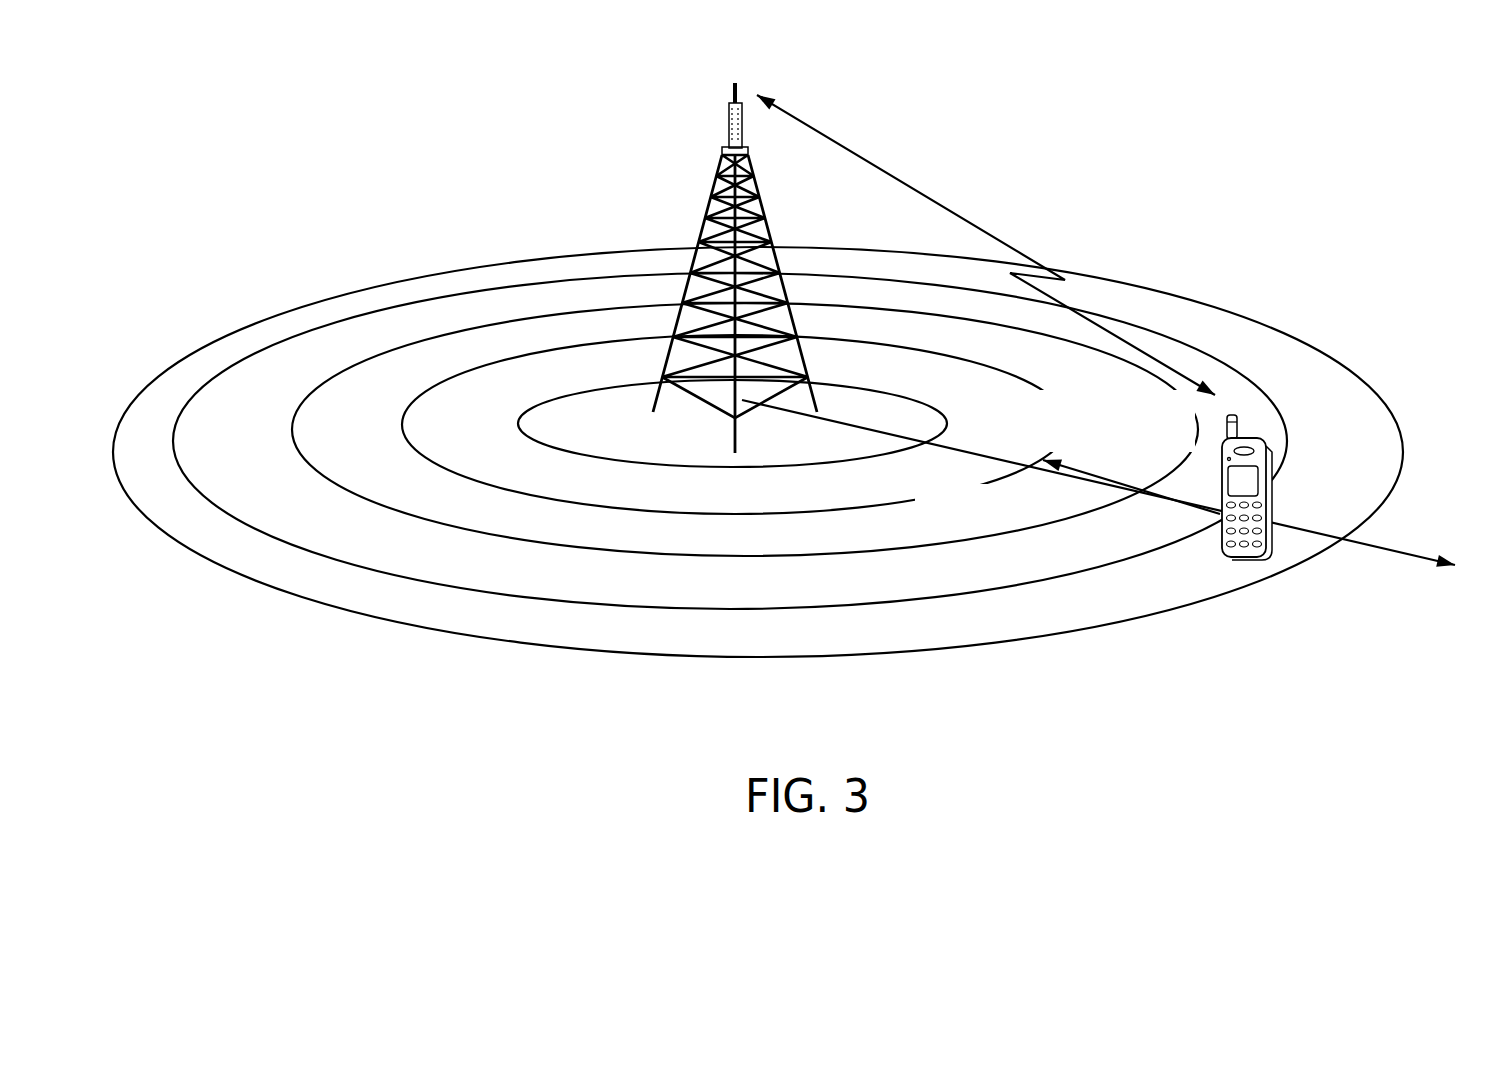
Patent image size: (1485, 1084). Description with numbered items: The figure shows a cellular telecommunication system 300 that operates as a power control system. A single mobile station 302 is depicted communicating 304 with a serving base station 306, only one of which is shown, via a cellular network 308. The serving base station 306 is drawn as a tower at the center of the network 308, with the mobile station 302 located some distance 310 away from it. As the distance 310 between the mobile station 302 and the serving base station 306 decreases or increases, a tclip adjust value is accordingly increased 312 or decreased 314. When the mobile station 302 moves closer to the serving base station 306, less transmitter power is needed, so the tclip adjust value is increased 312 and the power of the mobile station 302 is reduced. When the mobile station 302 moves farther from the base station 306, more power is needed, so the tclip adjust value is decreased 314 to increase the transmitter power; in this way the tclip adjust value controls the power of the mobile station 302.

The cellular telecommunication system 300 is at (483, 160).
The mobile station 302 is at (1273, 507).
The communicating 304 is at (930, 196).
The serving base station 306 is at (718, 150).
The cellular network 308 is at (1140, 283).
The distance 310 is at (845, 422).
The tclip adjust value increase 312 is at (1053, 393).
The tclip adjust value decrease 314 is at (1378, 637).